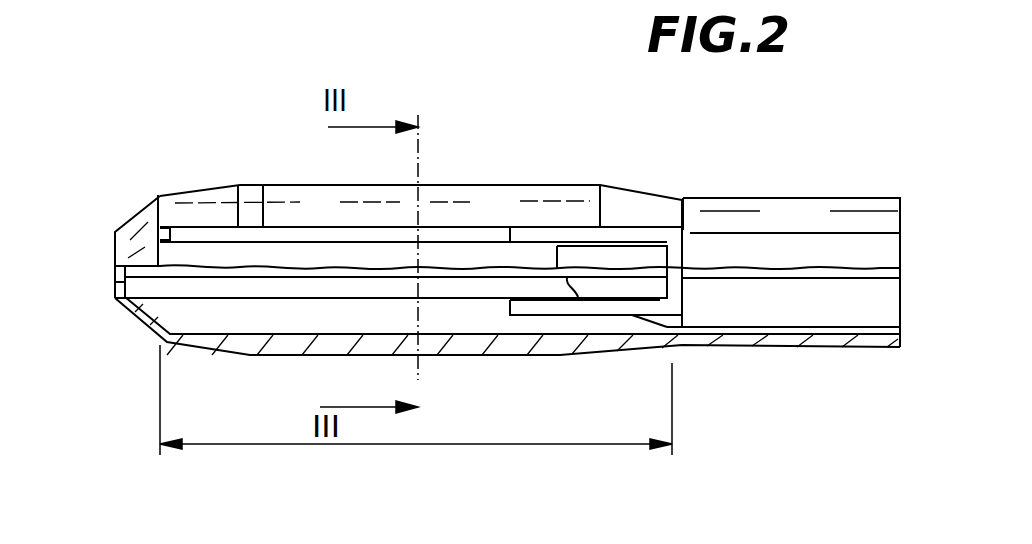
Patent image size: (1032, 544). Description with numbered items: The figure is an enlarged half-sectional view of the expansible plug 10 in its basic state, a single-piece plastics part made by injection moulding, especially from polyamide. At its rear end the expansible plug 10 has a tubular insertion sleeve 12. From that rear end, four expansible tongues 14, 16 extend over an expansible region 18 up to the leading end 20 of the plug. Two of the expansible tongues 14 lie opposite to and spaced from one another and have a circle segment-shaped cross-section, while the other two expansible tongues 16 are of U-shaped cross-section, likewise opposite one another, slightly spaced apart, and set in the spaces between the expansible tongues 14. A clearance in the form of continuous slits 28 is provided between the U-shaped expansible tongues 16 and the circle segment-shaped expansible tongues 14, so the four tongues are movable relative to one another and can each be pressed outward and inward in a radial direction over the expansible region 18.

The expansible plug 10 is at (538, 181).
The tubular insertion sleeve 12 is at (813, 222).
The expansible tongues of circle segment-shaped cross-section 14 is at (648, 200).
The expansible tongues of U-shaped cross-section 16 is at (449, 255).
The expansible region 18 is at (545, 447).
The leading end 20 is at (127, 222).
The continuous slits 28 is at (268, 232).